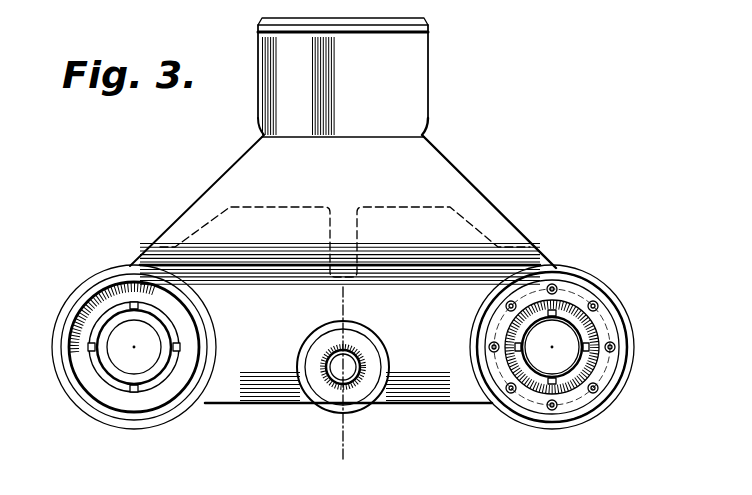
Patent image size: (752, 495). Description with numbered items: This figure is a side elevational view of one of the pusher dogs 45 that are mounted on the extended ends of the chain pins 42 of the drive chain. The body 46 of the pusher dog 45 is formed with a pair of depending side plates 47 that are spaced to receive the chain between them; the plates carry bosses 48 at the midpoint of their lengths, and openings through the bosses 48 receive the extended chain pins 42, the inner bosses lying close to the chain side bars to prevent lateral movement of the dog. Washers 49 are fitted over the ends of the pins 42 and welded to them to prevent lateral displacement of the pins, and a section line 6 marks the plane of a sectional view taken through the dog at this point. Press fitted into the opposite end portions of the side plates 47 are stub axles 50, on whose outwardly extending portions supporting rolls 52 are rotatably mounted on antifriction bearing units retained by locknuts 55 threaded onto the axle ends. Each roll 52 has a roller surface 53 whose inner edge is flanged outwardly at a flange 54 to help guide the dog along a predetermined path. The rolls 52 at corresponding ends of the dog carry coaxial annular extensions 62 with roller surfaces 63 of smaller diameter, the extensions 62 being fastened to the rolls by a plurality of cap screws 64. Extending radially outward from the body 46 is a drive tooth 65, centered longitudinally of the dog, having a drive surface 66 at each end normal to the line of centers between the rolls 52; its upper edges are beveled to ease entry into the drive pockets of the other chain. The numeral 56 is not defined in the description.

The section line 6 is at (319, 301).
The chain pin 42 is at (330, 366).
The pusher dog 45 is at (474, 187).
The body 46 is at (500, 225).
The side plates 47 is at (445, 395).
The bosses 48 is at (322, 408).
The washers 49 is at (358, 396).
The stub axles 50 is at (112, 337).
The supporting roll 52 is at (74, 388).
The roller surface 53 is at (84, 294).
The flange 54 is at (53, 362).
The locknuts 55 is at (110, 372).
The key notch 56 is at (92, 345).
The annular extensions 62 is at (572, 410).
The roller surfaces 63 is at (612, 388).
The cap screws 64 is at (559, 284).
The drive tooth 65 is at (418, 78).
The drive surface 66 is at (430, 55).